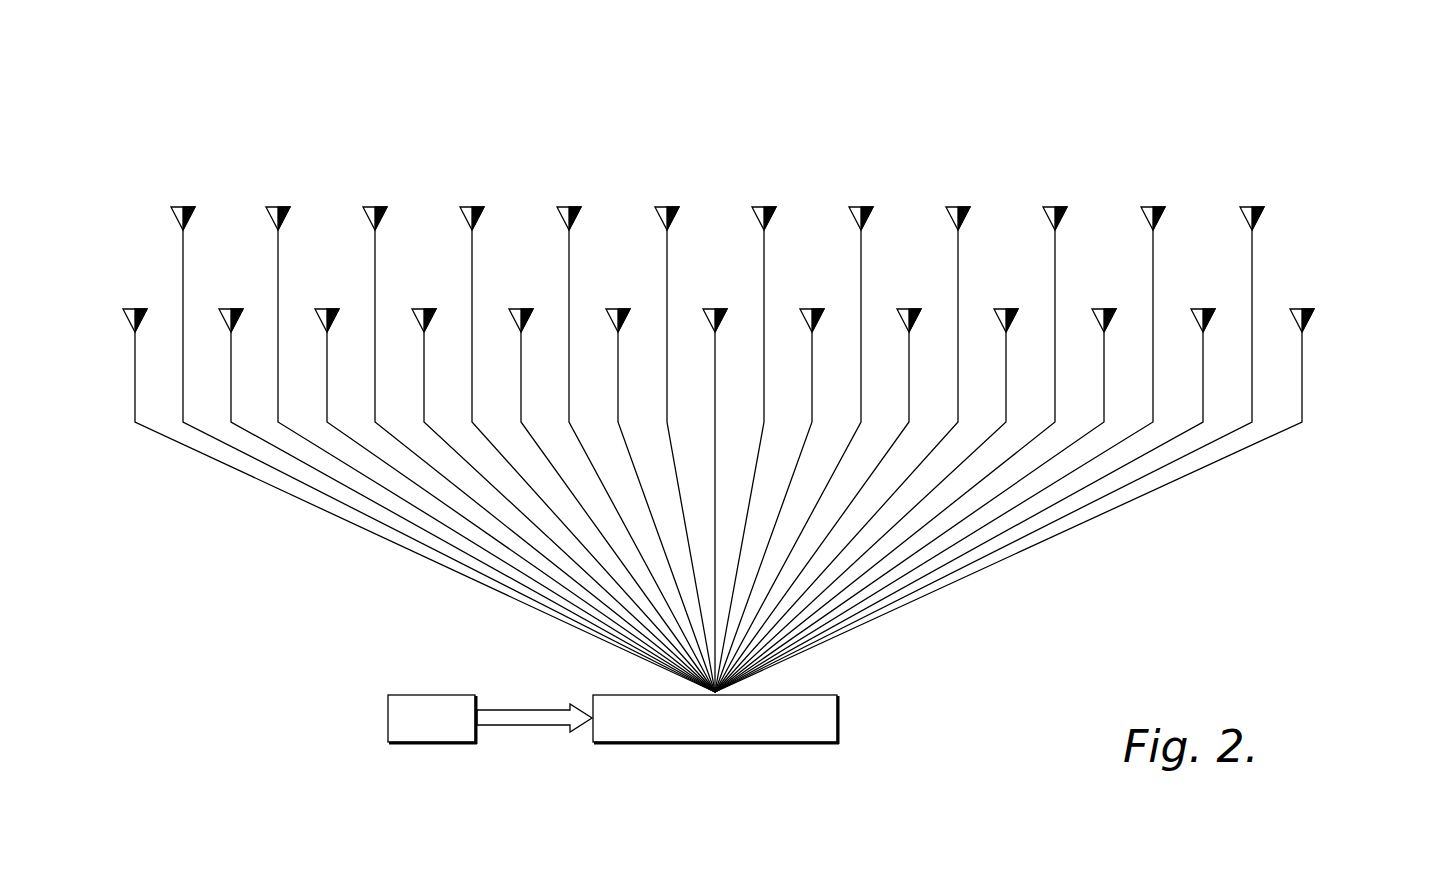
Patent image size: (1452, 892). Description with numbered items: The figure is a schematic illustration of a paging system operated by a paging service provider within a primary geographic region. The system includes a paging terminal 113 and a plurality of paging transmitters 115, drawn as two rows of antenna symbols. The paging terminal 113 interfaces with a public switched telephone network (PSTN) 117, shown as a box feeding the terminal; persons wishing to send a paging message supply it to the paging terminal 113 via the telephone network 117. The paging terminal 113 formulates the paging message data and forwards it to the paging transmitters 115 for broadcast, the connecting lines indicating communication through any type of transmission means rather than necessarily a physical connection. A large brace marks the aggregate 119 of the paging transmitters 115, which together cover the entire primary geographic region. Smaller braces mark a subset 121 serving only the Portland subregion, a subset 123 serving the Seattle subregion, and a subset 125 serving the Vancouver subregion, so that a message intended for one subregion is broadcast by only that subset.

The paging terminal 113 is at (627, 743).
The paging transmitters 115 is at (1348, 224).
The public switched telephone network (PSTN) 117 is at (418, 743).
The aggregate of the paging transmitters 119 is at (1327, 93).
The subset of the paging transmitters 121 is at (345, 175).
The subset of the paging transmitters 123 is at (548, 173).
The subset of the paging transmitters 125 is at (1083, 172).